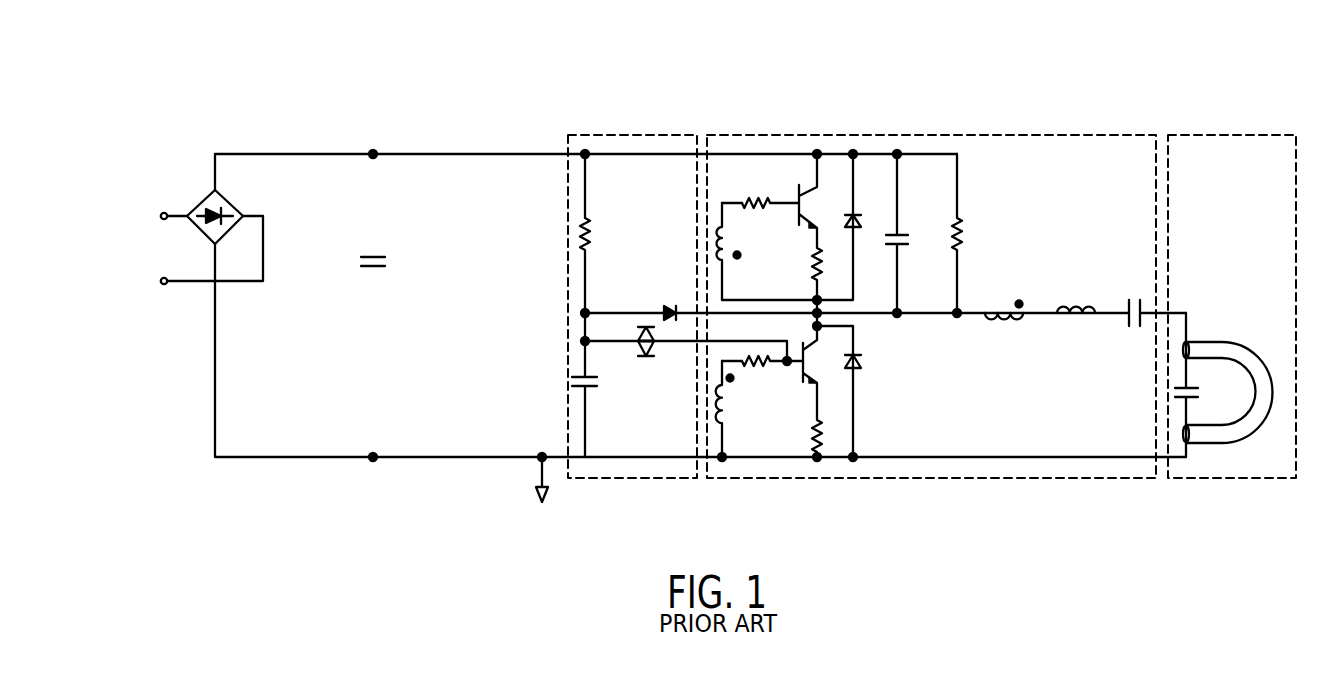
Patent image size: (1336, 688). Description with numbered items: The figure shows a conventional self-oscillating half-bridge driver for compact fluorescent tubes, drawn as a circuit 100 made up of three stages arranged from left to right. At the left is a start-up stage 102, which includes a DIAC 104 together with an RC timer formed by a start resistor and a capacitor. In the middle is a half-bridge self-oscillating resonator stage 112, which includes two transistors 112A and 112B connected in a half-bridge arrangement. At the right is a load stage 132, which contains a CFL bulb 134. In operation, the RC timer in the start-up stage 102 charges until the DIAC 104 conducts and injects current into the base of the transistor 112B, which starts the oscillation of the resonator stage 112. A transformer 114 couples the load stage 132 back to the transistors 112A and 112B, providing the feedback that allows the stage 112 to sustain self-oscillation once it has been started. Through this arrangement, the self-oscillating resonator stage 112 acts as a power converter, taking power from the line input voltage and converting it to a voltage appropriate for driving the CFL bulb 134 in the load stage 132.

The circuit 100 is at (265, 100).
The start-up stage 102 is at (667, 134).
The DIAC 104 is at (646, 358).
The half-bridge self-oscillating resonator stage 112 is at (733, 134).
The transistor 112A is at (807, 222).
The transistor 112B is at (805, 384).
The transformer 114 is at (1020, 318).
The load stage 132 is at (1290, 134).
The CFL bulb 134 is at (1218, 340).